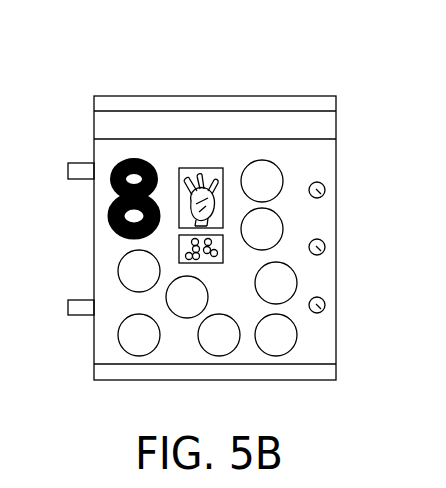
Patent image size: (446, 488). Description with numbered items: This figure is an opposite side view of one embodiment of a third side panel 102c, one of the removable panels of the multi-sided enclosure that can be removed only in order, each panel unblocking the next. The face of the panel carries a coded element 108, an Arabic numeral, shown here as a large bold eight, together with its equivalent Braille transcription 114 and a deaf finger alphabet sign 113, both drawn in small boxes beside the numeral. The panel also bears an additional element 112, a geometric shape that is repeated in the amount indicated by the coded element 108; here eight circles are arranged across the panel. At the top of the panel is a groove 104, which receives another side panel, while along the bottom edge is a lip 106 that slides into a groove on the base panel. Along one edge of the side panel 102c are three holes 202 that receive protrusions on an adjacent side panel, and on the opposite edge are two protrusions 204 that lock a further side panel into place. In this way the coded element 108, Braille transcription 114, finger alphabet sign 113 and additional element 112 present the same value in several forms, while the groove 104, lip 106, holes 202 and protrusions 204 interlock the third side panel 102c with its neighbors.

The third side panel 102c is at (336, 58).
The groove 104 is at (323, 130).
The lip 106 is at (331, 373).
The coded element 108 is at (82, 211).
The additional element 112 is at (106, 340).
The deaf finger alphabet sign 113 is at (184, 168).
The Braille transcription 114 is at (219, 264).
The holes 202 is at (325, 189).
The protrusions 204 is at (80, 171).